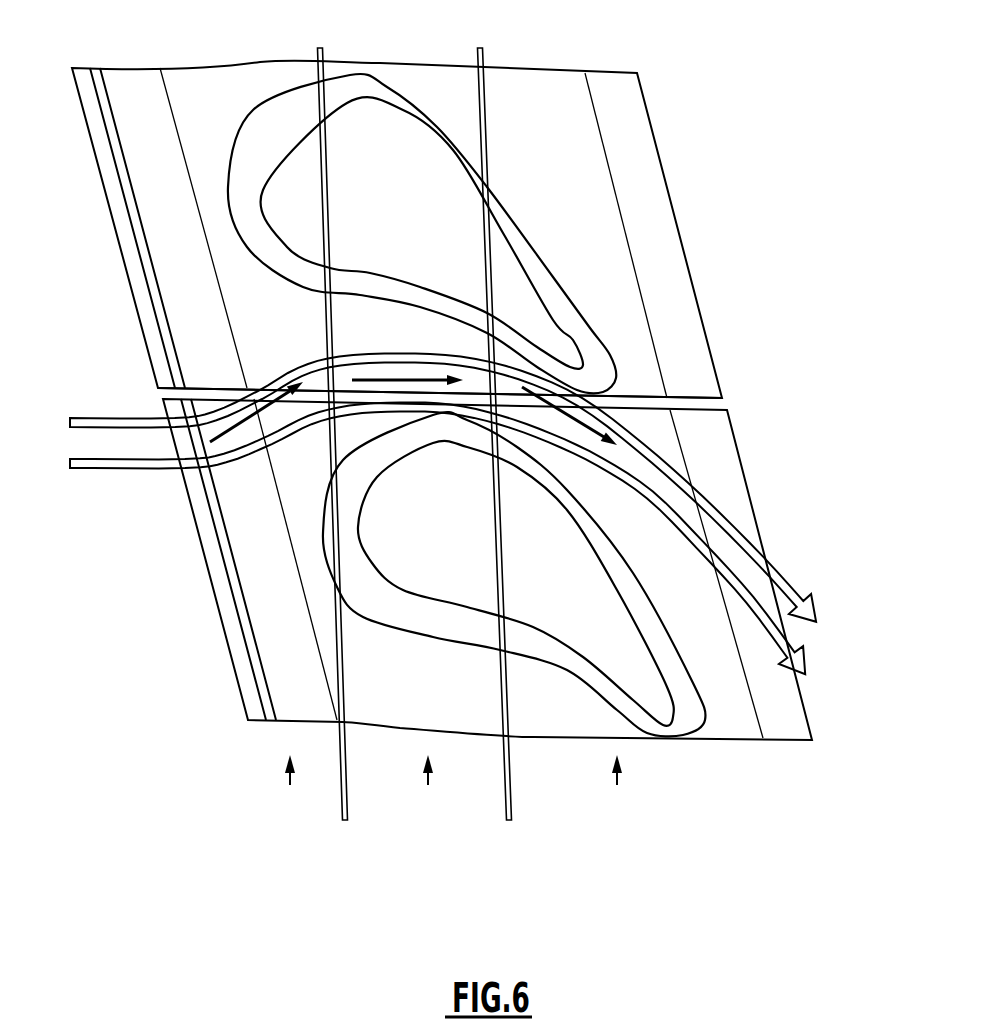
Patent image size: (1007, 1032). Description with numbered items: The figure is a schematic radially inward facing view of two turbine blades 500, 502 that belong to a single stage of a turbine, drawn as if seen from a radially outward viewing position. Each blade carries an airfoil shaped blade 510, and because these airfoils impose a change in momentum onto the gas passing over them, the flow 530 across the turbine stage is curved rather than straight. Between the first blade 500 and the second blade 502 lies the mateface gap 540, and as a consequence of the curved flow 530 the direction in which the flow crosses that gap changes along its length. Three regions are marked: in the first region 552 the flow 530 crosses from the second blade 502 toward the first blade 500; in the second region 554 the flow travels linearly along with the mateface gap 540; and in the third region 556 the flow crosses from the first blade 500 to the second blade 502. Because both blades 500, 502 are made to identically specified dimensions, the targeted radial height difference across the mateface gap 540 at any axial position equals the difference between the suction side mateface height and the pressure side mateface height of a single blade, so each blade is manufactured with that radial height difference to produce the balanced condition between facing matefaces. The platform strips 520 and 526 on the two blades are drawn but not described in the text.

The first turbine blade 500 is at (683, 173).
The second turbine blade 502 is at (770, 486).
The airfoil shaped blade 510 is at (417, 150).
The platform of first airfoil assembly 520 is at (588, 152).
The platform of second airfoil assembly 526 is at (677, 453).
The flow 530 is at (98, 423).
The mateface gap 540 is at (693, 403).
The first region 552 is at (290, 785).
The second region 554 is at (428, 785).
The third region 556 is at (617, 785).